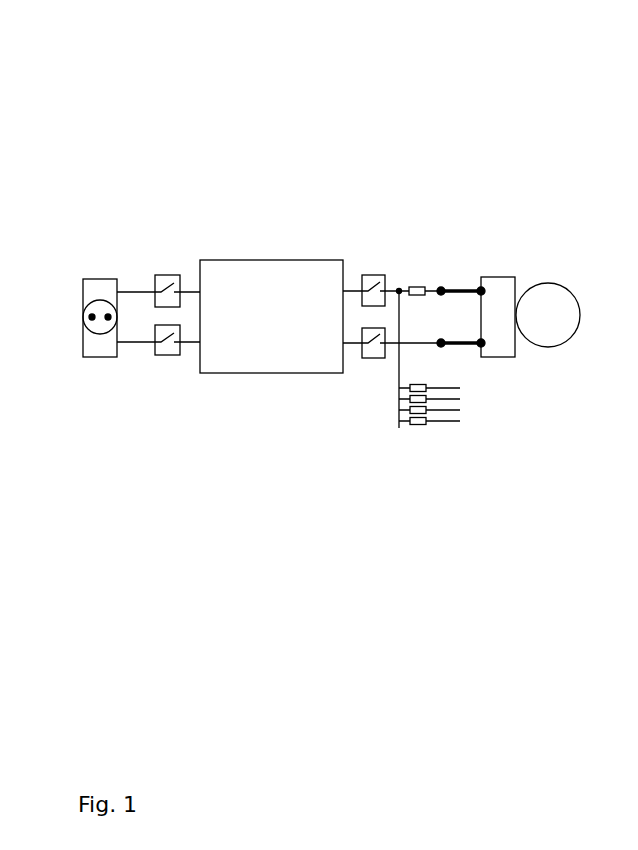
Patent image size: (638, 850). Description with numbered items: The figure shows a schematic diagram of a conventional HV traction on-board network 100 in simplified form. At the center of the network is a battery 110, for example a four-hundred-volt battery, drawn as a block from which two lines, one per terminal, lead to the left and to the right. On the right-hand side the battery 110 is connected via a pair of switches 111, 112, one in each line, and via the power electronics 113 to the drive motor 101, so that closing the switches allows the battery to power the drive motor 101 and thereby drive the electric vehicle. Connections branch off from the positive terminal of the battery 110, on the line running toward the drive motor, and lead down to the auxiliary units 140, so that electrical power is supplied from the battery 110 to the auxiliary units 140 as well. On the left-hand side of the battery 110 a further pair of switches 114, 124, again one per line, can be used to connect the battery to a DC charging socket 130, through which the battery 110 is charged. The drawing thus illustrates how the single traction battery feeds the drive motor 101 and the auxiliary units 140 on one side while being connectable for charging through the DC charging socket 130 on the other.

The HV traction on-board network 100 is at (83, 48).
The DC charging socket 130 is at (97, 238).
The switch 114 is at (166, 271).
The switch 124 is at (168, 360).
The battery 110 is at (271, 256).
The switch 111 is at (377, 271).
The switch 112 is at (379, 360).
The power electronics 113 is at (492, 272).
The drive motor 101 is at (547, 280).
The auxiliary units 140 is at (514, 440).